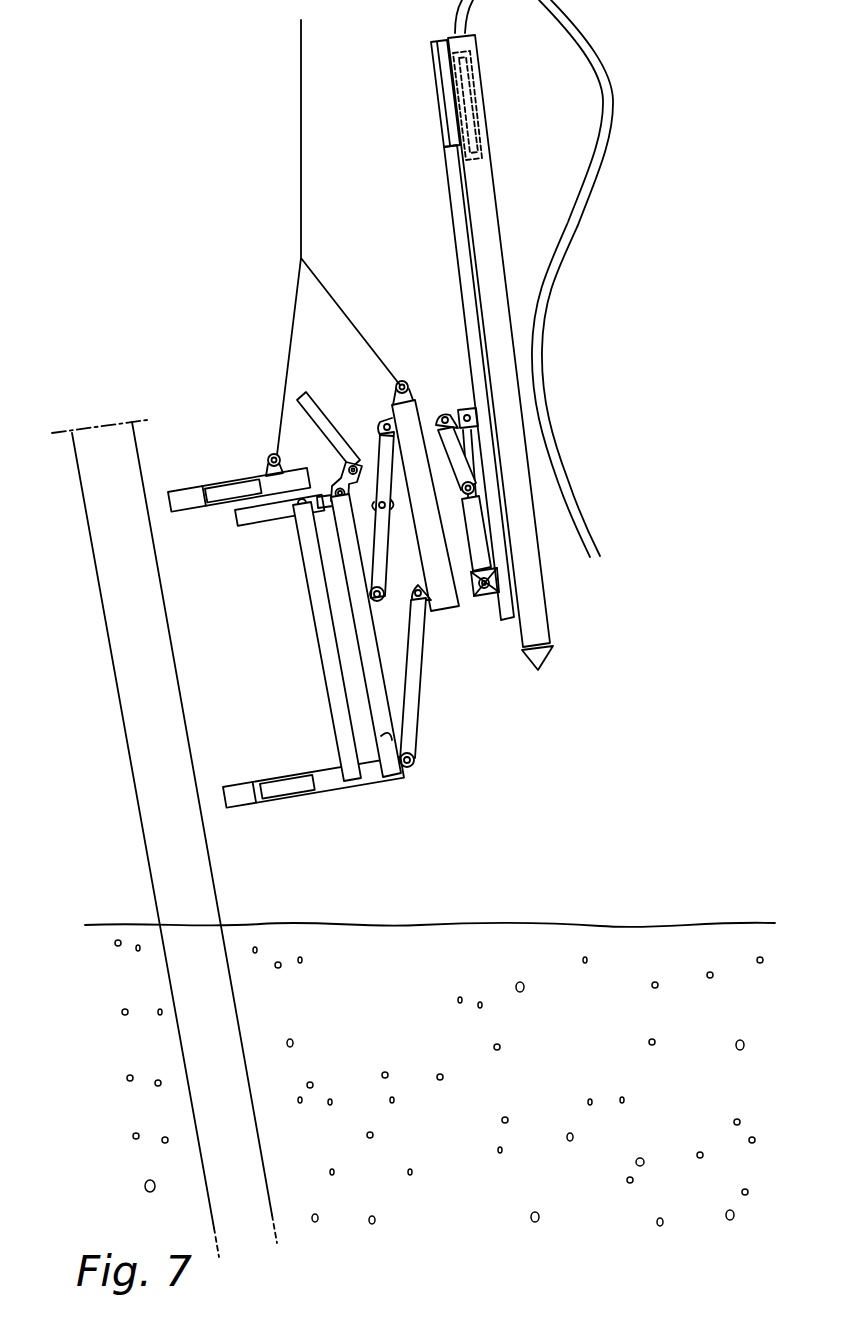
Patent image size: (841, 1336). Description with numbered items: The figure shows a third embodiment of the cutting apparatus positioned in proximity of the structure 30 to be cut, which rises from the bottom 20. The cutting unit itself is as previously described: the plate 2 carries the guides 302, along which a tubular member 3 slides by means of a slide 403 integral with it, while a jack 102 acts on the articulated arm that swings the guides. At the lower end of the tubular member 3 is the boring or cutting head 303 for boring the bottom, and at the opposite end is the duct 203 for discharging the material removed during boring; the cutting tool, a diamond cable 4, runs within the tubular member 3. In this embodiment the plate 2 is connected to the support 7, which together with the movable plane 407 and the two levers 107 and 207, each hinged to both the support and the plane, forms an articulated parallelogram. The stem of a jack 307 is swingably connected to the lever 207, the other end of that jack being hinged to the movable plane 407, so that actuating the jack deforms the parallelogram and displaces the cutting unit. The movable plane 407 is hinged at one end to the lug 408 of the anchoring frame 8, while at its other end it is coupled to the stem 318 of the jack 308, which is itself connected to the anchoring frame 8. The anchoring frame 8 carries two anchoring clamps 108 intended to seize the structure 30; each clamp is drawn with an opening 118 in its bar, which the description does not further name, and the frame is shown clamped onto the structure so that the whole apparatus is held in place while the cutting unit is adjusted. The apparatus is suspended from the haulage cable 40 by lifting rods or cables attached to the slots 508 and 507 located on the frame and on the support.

The plate 2 is at (425, 500).
The tubular member 3 is at (529, 360).
The diamond cable 4 is at (470, 115).
The support 7 is at (440, 612).
The anchoring frame 8 is at (352, 781).
The bottom 20 is at (607, 935).
The structure to be cut 30 is at (130, 748).
The haulage cable 40 is at (303, 193).
The jack 102 is at (480, 560).
The lever 107 is at (420, 712).
The anchoring clamp 108 is at (283, 620).
The clamp opening 118 is at (228, 492).
The duct 203 is at (597, 153).
The lever 207 is at (383, 443).
The guide 302 is at (456, 397).
The boring or cutting head 303 is at (547, 660).
The jack 307 is at (313, 395).
The jack 308 is at (249, 522).
The stem of the jack 318 is at (325, 506).
The slide 403 is at (445, 110).
The movable plane 407 is at (390, 737).
The lug 408 is at (375, 785).
The slot 507 is at (404, 380).
The slot 508 is at (272, 453).